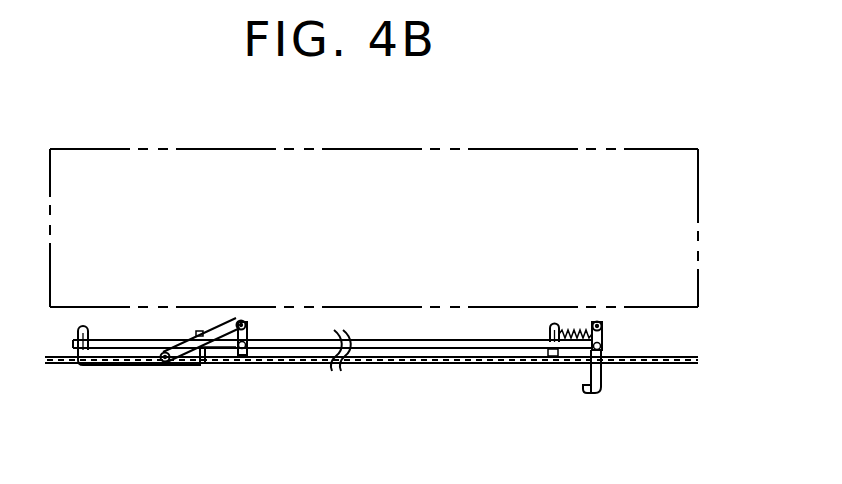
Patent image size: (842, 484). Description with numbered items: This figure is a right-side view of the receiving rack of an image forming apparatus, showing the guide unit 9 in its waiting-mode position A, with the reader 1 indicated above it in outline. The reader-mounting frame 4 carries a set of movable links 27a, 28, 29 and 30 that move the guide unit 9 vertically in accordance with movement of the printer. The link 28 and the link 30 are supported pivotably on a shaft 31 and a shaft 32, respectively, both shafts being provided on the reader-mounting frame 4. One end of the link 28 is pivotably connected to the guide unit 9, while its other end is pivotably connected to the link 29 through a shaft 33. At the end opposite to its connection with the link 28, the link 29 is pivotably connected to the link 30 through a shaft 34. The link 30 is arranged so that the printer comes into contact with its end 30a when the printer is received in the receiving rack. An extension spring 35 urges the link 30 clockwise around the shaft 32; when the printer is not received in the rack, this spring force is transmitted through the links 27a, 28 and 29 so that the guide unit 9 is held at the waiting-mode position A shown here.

The reader 1 is at (117, 167).
The reader-mounting frame 4 is at (317, 365).
The guide unit 9 is at (127, 367).
The link 27a is at (107, 348).
The link 28 is at (222, 338).
The link 29 is at (402, 344).
The link 30 is at (602, 376).
The end 30a is at (589, 388).
The shaft 31 is at (240, 318).
The shaft 32 is at (596, 320).
The shaft 33 is at (253, 358).
The shaft 34 is at (602, 345).
The extension spring 35 is at (571, 321).